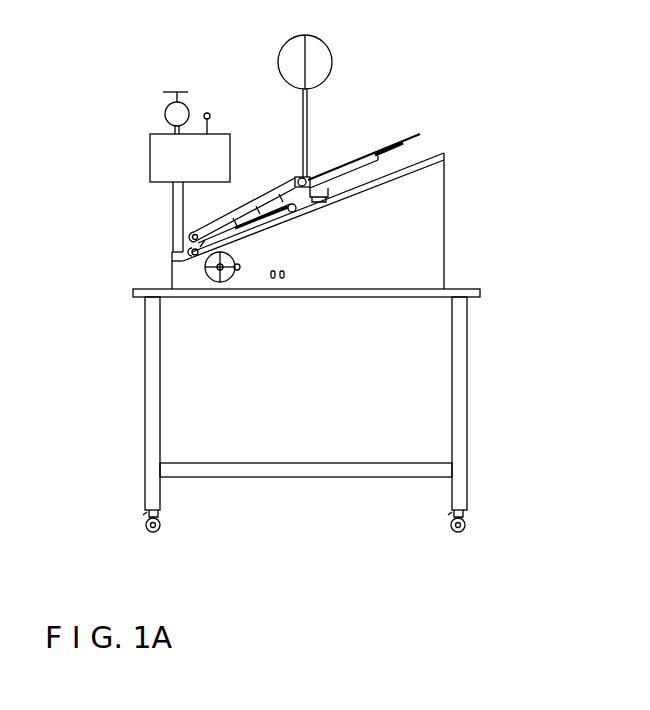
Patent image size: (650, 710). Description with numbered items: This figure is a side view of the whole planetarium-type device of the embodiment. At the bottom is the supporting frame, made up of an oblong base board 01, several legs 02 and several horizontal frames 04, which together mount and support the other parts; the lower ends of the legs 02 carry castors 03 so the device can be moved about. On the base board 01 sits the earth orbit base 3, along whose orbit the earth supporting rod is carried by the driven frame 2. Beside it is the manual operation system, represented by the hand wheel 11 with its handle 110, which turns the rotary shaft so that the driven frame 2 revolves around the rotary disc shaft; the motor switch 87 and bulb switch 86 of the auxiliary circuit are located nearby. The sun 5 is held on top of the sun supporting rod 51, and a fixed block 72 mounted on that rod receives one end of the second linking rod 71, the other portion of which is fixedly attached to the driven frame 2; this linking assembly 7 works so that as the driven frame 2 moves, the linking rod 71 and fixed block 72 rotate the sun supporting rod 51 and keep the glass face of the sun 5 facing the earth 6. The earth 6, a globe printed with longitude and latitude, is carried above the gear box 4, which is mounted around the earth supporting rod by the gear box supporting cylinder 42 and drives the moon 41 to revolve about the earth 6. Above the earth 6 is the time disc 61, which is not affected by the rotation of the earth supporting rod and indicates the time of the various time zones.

The oblong base board 01 is at (480, 293).
The legs 02 is at (462, 374).
The castors 03 is at (467, 524).
The horizontal frames 04 is at (378, 478).
The driven frame 2 is at (172, 257).
The earth orbit base 3 is at (445, 155).
The gear box 4 is at (150, 145).
The moon 41 is at (208, 113).
The gear box supporting cylinder 42 is at (183, 212).
The sun 5 is at (323, 52).
The sun supporting rod 51 is at (308, 110).
The earth 6 is at (165, 115).
The time disc 61 is at (177, 91).
The slide plate 7 is at (410, 138).
The second linking rod 71 is at (280, 182).
The fixed block 72 is at (310, 177).
The hand wheel 11 is at (218, 283).
The handle 110 is at (240, 265).
The bulb switch 86 is at (282, 279).
The motor switch 87 is at (272, 279).